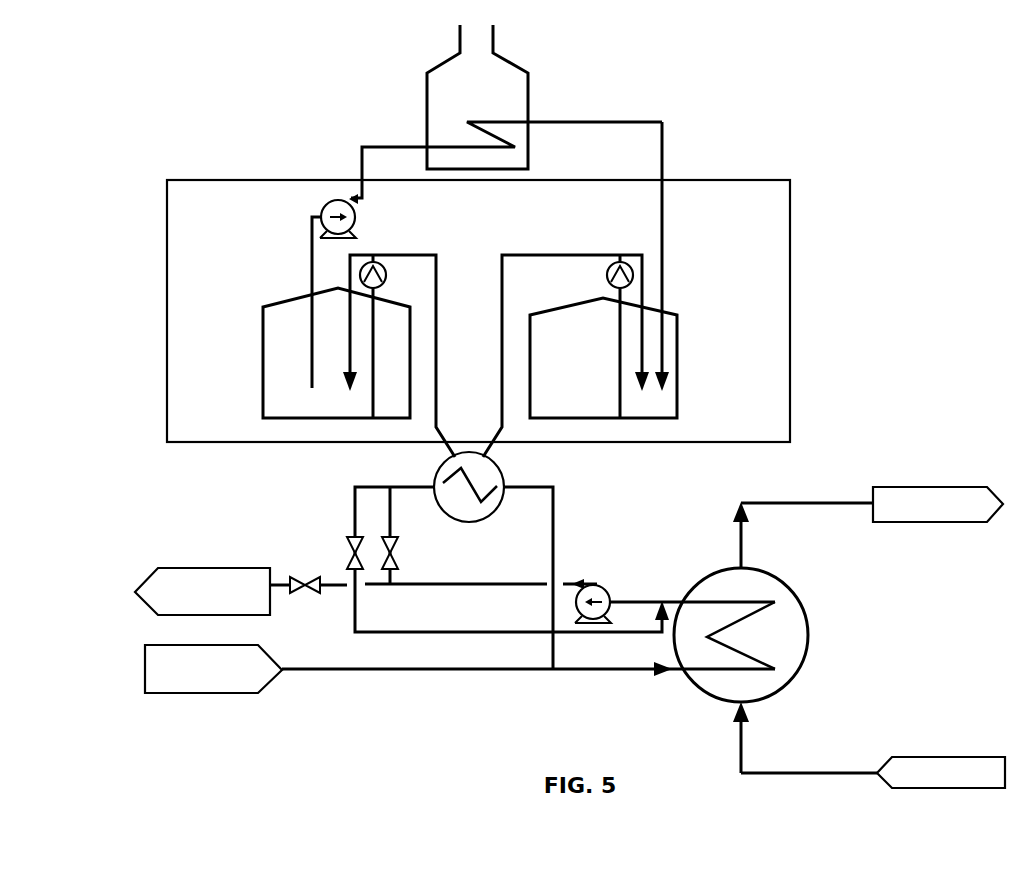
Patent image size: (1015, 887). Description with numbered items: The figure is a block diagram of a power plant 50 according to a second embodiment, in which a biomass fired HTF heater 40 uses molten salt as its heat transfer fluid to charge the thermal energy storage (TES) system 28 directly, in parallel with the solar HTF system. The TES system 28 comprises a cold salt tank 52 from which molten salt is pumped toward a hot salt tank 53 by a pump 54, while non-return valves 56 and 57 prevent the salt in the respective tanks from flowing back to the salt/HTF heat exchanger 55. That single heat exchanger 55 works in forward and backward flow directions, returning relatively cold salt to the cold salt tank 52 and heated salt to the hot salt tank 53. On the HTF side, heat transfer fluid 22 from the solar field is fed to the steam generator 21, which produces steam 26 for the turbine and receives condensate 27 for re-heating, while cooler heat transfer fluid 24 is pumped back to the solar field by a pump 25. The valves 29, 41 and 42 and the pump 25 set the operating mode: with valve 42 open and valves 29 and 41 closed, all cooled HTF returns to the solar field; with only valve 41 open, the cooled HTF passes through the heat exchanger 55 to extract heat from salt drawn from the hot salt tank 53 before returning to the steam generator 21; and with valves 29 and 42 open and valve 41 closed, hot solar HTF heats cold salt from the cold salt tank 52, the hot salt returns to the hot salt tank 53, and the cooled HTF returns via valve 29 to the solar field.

The steam generator 21 is at (790, 680).
The heat transfer fluid from the solar field 22 is at (211, 694).
The cooler heat transfer fluid 24 is at (195, 567).
The pump 25 is at (597, 585).
The steam 26 is at (950, 523).
The condensate 27 is at (950, 790).
The thermal energy storage (TES) system 28 is at (790, 340).
The second valve 29 is at (348, 548).
The biomass fired HTF heater 40 is at (533, 140).
The valve 41 is at (398, 550).
The valve 42 is at (300, 579).
The power plant 50 is at (452, 738).
The cold salt tank 52 is at (263, 383).
The hot salt tank 53 is at (677, 383).
The pump 54 is at (321, 208).
The salt/HTF heat exchanger 55 is at (503, 493).
The non-return valve 56 is at (386, 276).
The non-return valve 57 is at (607, 273).